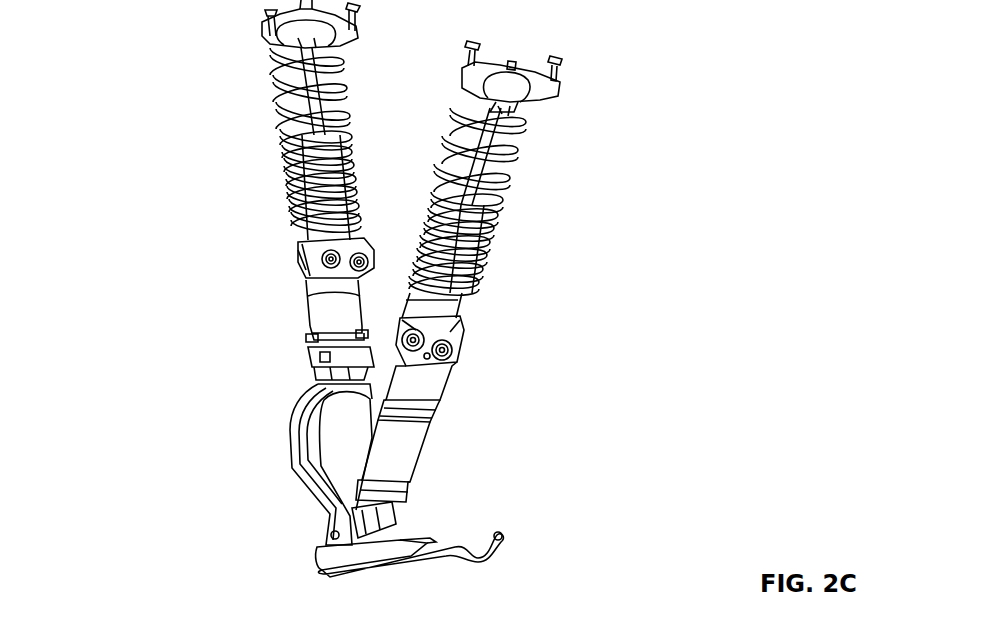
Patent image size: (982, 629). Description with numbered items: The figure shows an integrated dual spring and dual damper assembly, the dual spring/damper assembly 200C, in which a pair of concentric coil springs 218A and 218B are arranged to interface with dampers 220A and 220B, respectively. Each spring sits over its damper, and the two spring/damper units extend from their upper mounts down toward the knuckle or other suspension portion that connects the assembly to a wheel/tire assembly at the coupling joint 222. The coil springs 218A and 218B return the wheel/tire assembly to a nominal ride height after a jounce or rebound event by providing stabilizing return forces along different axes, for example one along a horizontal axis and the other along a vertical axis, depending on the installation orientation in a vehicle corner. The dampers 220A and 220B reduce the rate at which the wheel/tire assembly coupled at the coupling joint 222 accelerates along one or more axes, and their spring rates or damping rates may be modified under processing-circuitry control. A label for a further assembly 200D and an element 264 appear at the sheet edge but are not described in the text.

The dual spring/damper assembly 200C is at (130, 36).
The suspension assembly 200D is at (88, 626).
The component 264 is at (155, 626).
The concentric coil spring 218A is at (272, 118).
The concentric coil spring 218B is at (505, 206).
The damper 220A is at (310, 352).
The damper 220B is at (432, 398).
The coupling joint 222 is at (514, 578).